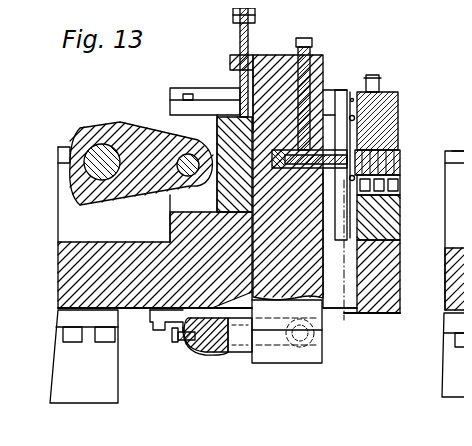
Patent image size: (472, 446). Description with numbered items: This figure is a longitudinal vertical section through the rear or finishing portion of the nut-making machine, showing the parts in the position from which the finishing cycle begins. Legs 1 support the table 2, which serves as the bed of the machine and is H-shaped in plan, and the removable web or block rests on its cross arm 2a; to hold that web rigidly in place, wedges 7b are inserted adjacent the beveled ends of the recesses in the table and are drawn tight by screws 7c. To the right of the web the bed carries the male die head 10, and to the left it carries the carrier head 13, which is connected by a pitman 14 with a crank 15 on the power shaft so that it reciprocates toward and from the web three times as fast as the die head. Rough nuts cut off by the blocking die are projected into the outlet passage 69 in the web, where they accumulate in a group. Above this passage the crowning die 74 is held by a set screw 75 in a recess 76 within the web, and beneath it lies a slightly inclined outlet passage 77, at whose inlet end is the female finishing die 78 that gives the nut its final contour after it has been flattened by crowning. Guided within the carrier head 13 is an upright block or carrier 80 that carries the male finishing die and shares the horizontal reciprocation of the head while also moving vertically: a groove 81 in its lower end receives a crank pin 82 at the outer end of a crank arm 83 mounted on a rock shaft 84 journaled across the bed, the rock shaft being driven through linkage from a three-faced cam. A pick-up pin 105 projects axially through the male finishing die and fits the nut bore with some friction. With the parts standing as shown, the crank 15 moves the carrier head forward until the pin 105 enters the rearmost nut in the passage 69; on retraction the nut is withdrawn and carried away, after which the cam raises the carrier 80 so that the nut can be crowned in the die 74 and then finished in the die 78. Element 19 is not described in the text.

The legs 1 is at (89, 398).
The table 2 is at (146, 318).
The cross arm 2a is at (370, 316).
The wedges 7b is at (345, 316).
The screws 7c is at (357, 110).
The male die head 10 is at (401, 156).
The carrier head 13 is at (222, 125).
The pitman 14 is at (156, 140).
The crank 15 is at (119, 133).
The wall 19 is at (330, 172).
The outlet passage 69 is at (399, 187).
The crowning die 74 is at (394, 97).
The set screw 75 is at (377, 92).
The recess 76 is at (398, 130).
The outlet passage 77 is at (398, 212).
The finishing die 78 is at (374, 290).
The carrier 80 is at (272, 72).
The groove 81 is at (277, 337).
The crank pin 82 is at (302, 352).
The crank arm 83 is at (235, 348).
The rock shaft 84 is at (193, 348).
The pick-up pin 105 is at (348, 114).